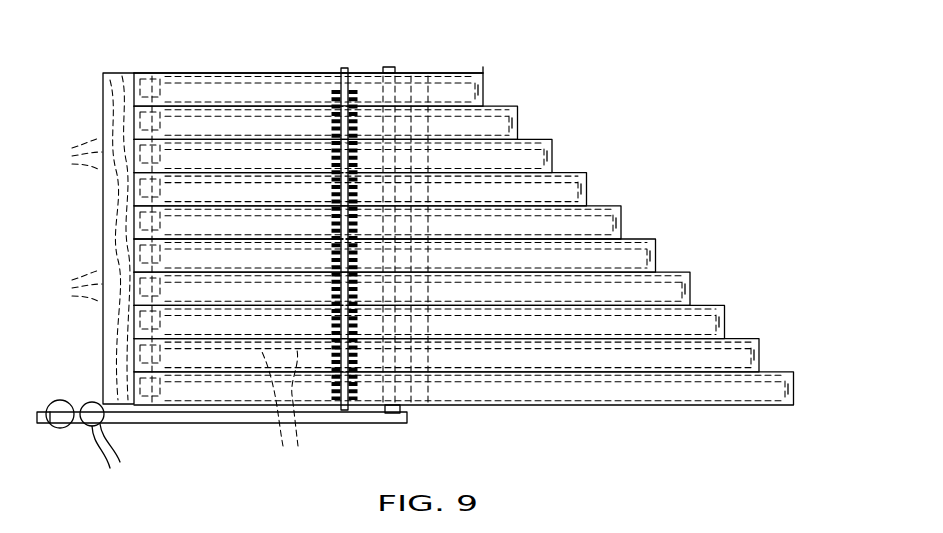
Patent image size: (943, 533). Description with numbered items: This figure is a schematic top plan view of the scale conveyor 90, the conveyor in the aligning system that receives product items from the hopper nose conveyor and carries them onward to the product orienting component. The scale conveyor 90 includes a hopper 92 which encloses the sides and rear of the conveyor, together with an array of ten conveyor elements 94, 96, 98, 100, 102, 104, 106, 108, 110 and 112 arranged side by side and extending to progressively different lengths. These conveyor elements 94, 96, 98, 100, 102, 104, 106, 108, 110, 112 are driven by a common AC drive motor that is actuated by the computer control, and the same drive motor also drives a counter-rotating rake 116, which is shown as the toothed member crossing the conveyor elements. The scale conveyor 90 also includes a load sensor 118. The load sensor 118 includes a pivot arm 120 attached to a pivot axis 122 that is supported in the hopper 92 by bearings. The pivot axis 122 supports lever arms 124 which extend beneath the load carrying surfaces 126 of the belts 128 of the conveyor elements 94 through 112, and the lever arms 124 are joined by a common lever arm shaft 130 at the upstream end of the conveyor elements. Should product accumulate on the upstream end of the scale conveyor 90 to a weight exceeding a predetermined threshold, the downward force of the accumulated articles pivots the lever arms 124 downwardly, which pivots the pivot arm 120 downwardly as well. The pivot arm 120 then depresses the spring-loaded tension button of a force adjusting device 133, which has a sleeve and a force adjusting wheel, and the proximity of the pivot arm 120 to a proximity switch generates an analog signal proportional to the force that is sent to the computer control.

The scale conveyor 90 is at (173, 70).
The hopper 92 is at (100, 96).
The conveyor element 94 is at (476, 90).
The conveyor element 96 is at (510, 123).
The conveyor element 98 is at (545, 158).
The conveyor element 100 is at (579, 190).
The conveyor element 102 is at (613, 225).
The conveyor element 104 is at (645, 258).
The conveyor element 106 is at (682, 291).
The conveyor element 108 is at (712, 324).
The conveyor element 110 is at (747, 358).
The conveyor element 112 is at (778, 388).
The counter-rotating rake 116 is at (345, 68).
The load sensor 118 is at (394, 429).
The pivot arm 120 is at (175, 424).
The pivot axis 122 is at (390, 67).
The lever arms 124 is at (176, 304).
The load carrying surfaces 126 is at (230, 73).
The belts 128 is at (280, 73).
The common lever arm shaft 130 is at (155, 77).
The force adjusting device 133 is at (59, 438).